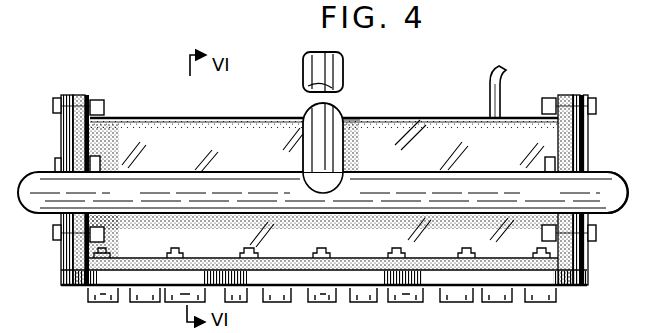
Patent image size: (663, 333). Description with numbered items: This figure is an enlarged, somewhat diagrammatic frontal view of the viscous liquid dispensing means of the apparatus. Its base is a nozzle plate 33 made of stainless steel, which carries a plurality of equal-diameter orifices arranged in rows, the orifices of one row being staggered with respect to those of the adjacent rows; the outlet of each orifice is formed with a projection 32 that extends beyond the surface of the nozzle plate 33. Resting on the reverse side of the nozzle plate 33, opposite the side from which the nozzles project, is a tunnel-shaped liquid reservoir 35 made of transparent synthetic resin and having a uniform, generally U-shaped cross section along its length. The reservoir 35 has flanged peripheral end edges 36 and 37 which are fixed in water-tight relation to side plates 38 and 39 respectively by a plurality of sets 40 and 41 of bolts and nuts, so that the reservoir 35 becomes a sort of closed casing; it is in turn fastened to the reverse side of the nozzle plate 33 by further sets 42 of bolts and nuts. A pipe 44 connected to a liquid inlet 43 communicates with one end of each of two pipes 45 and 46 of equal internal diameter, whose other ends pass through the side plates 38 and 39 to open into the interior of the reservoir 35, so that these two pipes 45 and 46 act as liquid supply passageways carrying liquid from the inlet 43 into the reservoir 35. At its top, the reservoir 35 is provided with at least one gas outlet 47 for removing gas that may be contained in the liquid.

The projection 32 is at (141, 296).
The nozzle plate 33 is at (298, 287).
The tunnel-shaped liquid reservoir 35 is at (412, 136).
The flanged peripheral end edge 36 is at (561, 146).
The flanged peripheral end edge 37 is at (95, 143).
The side plate 38 is at (584, 136).
The side plate 39 is at (64, 133).
The set of bolts and nuts 40 is at (595, 105).
The set of bolts and nuts 41 is at (55, 98).
The set of bolts and nuts 42 is at (93, 290).
The liquid inlet 43 is at (344, 63).
The pipe 44 is at (345, 146).
The pipe 45 is at (622, 178).
The pipe 46 is at (50, 178).
The gas outlet 47 is at (489, 83).